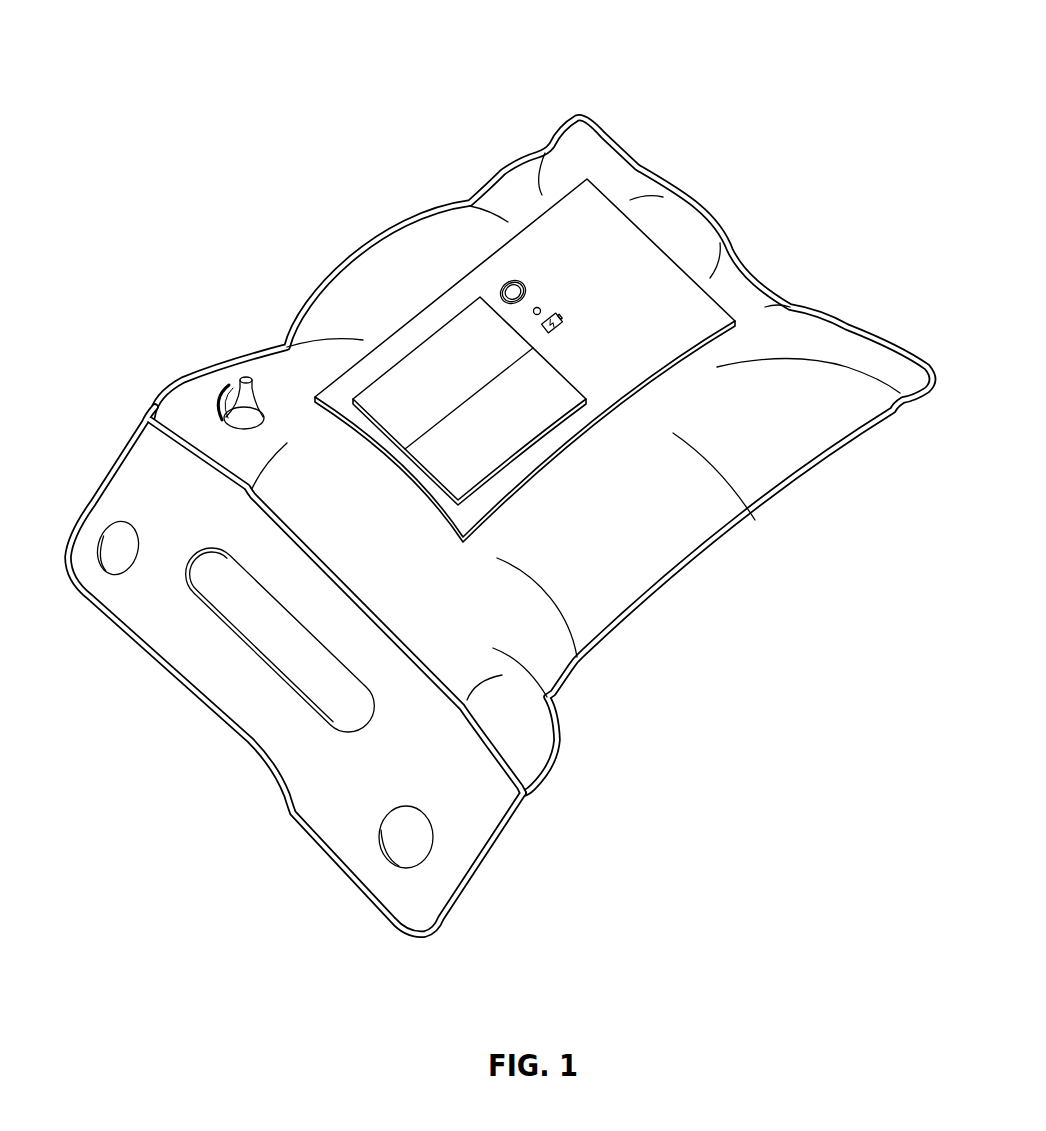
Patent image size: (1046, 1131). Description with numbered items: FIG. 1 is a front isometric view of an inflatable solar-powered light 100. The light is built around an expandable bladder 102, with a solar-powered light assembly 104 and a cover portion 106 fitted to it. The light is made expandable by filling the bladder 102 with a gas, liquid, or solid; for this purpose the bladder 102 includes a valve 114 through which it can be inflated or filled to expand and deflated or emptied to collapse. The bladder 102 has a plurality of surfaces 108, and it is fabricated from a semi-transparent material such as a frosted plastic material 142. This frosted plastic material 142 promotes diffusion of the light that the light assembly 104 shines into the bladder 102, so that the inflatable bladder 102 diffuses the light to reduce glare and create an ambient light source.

The inflatable solar-powered light 100 is at (329, 53).
The expandable bladder 102 is at (807, 432).
The solar-powered light assembly 104 is at (532, 216).
The cover portion 106 is at (552, 257).
The surfaces 108 is at (572, 547).
The valve 114 is at (244, 378).
The frosted plastic material 142 is at (296, 499).